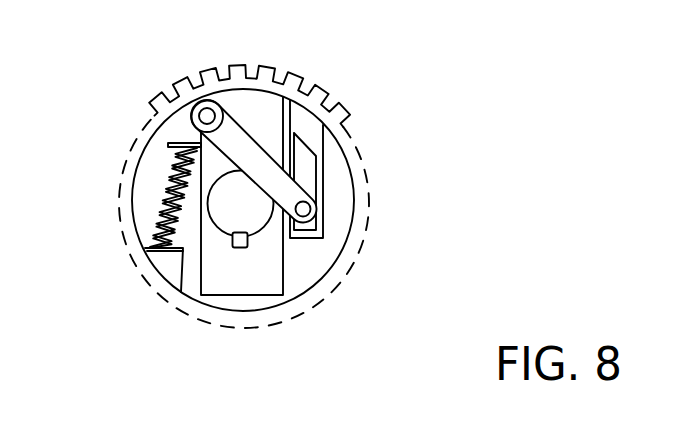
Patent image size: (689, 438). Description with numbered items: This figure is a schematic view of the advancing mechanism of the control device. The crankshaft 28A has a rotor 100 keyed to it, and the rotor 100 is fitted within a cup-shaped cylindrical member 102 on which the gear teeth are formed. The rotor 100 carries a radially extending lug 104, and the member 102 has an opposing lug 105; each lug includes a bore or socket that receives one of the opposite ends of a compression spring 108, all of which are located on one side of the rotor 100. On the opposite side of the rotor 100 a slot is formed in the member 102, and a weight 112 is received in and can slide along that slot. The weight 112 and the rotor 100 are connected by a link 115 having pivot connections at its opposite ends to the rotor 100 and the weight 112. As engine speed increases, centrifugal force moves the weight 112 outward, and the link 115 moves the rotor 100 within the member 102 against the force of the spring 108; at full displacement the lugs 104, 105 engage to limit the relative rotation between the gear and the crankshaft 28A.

The rotor 100 is at (260, 258).
The cup-shaped cylindrical member 102 is at (333, 158).
The radially extending lug 104 is at (190, 128).
The opposing lug 105 is at (167, 262).
The compression spring 108 is at (167, 185).
The weight 112 is at (305, 174).
The link 115 is at (233, 124).
The crankshaft 28A is at (236, 248).